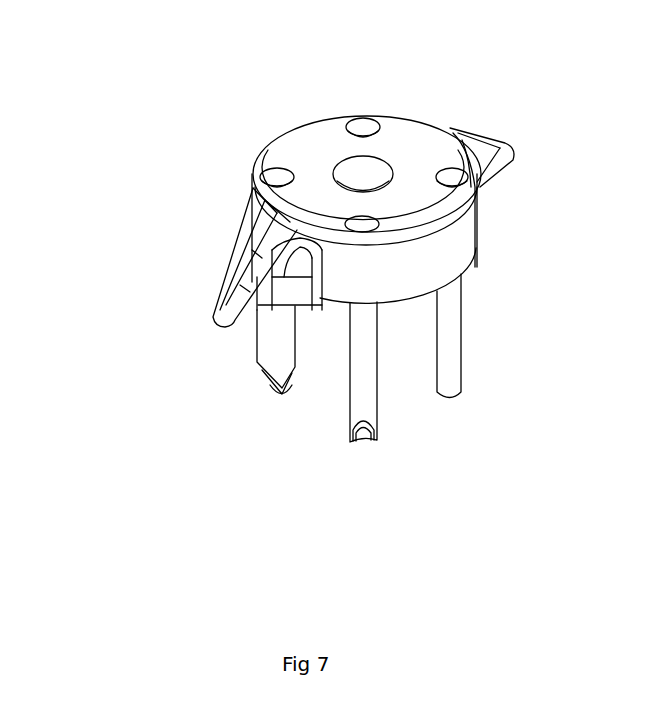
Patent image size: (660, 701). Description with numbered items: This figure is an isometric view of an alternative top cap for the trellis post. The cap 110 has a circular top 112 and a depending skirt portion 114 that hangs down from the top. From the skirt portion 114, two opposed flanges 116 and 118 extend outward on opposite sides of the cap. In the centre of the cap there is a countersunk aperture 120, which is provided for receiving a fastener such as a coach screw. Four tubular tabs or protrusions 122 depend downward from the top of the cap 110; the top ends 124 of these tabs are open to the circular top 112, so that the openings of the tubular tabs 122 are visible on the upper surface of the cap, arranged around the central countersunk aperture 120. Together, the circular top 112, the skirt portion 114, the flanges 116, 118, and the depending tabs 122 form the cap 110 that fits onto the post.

The cap 110 is at (480, 93).
The circular top 112 is at (395, 128).
The depending skirt portion 114 is at (467, 233).
The flange 116 is at (240, 285).
The flange 118 is at (508, 151).
The countersunk aperture 120 is at (358, 172).
The tubular tabs/protrusions 122 is at (273, 349).
The top ends 124 is at (362, 127).